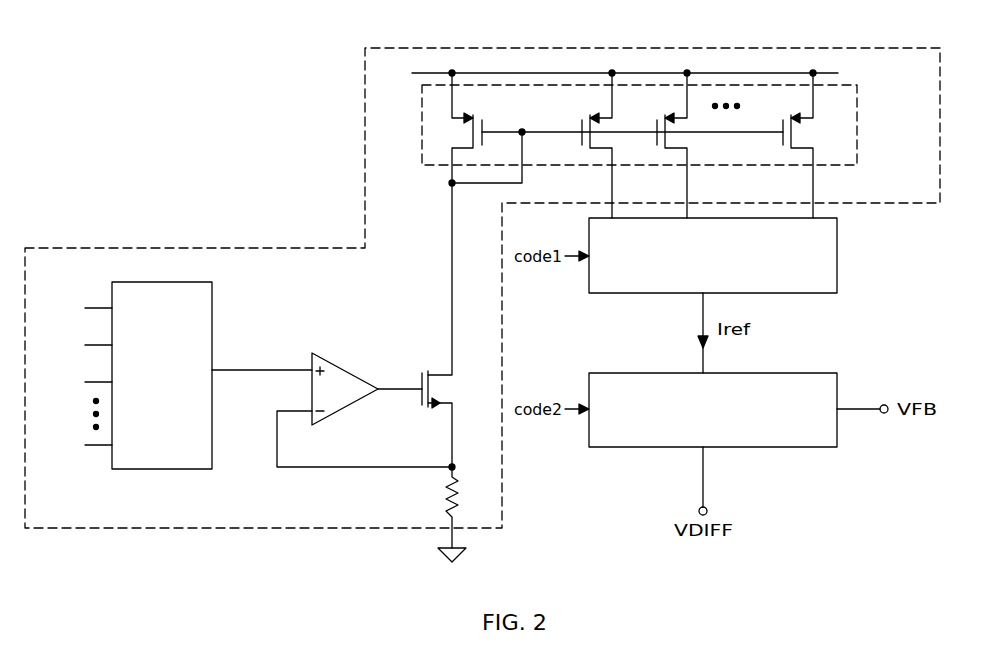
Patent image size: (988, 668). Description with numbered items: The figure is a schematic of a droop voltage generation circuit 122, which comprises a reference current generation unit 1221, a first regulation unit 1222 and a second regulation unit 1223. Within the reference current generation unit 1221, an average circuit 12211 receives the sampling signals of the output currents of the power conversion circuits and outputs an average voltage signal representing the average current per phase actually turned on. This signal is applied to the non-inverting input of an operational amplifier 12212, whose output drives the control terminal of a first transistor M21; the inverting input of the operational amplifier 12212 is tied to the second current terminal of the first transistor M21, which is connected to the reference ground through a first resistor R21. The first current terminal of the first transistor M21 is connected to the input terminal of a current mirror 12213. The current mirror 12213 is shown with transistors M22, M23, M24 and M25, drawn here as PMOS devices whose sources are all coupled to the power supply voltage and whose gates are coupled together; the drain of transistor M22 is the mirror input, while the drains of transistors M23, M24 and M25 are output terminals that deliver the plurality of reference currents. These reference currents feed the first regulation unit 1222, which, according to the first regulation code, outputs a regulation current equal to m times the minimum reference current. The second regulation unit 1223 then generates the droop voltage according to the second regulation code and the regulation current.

The droop voltage generation circuit 122 is at (199, 62).
The reference current generation unit 1221 is at (230, 254).
The average circuit 12211 is at (162, 375).
The operational amplifier 12212 is at (341, 382).
The current mirror 12213 is at (853, 129).
The first regulation unit 1222 is at (713, 255).
The second regulation unit 1223 is at (713, 410).
The first transistor M21 is at (458, 325).
The transistor M22 is at (478, 128).
The transistor M23 is at (586, 145).
The transistor M24 is at (660, 145).
The transistor M25 is at (786, 145).
The first resistor R21 is at (472, 507).